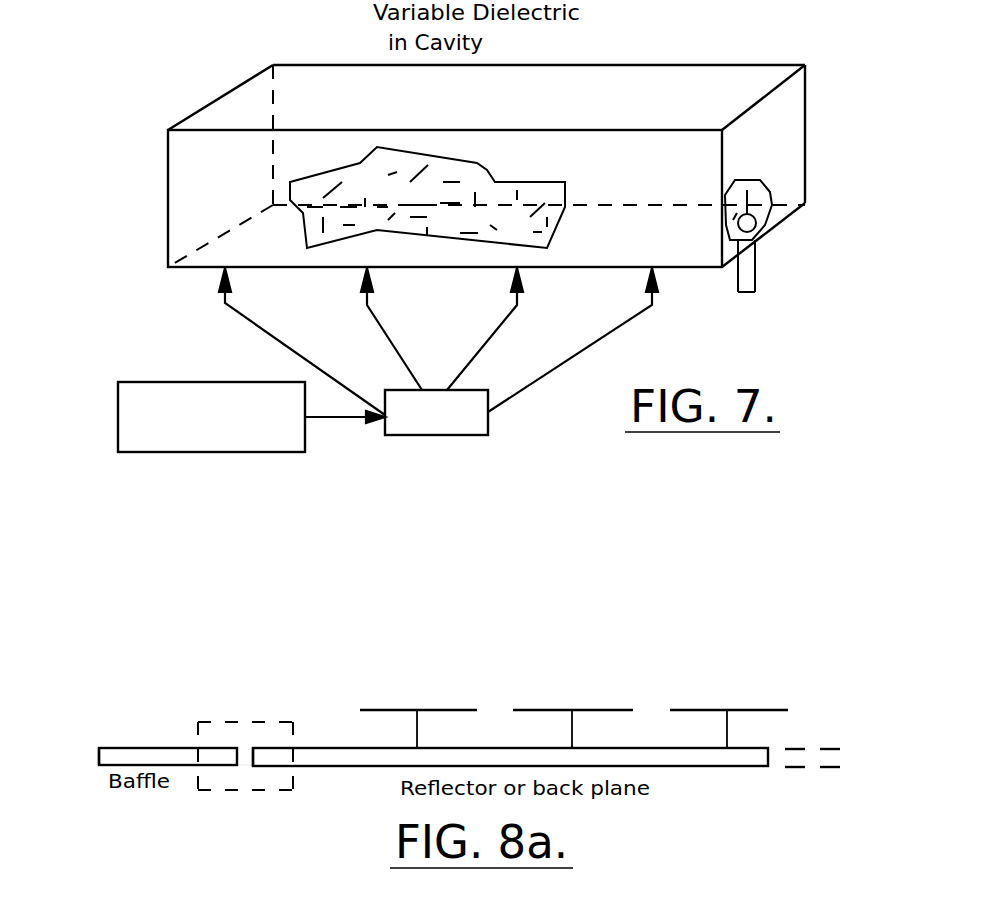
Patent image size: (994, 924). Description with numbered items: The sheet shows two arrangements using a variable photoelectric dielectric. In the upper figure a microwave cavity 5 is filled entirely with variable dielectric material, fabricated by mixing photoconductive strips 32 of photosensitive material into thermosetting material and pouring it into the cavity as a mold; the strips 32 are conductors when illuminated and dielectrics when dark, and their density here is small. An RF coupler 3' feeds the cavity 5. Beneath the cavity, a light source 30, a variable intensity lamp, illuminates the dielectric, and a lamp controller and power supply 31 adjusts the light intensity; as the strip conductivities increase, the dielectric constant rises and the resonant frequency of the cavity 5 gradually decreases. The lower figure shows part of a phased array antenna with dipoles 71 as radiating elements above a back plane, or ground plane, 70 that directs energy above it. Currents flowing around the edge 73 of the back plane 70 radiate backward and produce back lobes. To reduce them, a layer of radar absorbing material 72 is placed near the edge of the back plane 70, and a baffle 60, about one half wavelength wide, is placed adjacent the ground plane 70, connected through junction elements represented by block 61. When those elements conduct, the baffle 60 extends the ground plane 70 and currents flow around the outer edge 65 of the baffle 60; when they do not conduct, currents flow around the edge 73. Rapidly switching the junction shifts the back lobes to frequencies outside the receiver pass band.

In FIG. 7, the microwave cavity 5 is at (706, 62).
In FIG. 7, the photosensitive strips 32 is at (555, 205).
In FIG. 7, the RF coupler 3' is at (786, 256).
In FIG. 7, the lamp controller and power supply 31 is at (201, 375).
In FIG. 7, the light source 30 is at (410, 437).
In FIG. 8a, the baffle 60 is at (167, 747).
In FIG. 8a, the outer edge of the baffle 65 is at (95, 757).
In FIG. 8a, the junction block 61 is at (288, 718).
In FIG. 8a, the edge of the back plane 73 is at (253, 752).
In FIG. 8a, the back plane 70 is at (355, 767).
In FIG. 8a, the radar absorbing material 72 is at (305, 745).
In FIG. 8a, the dipoles 71 is at (507, 705).